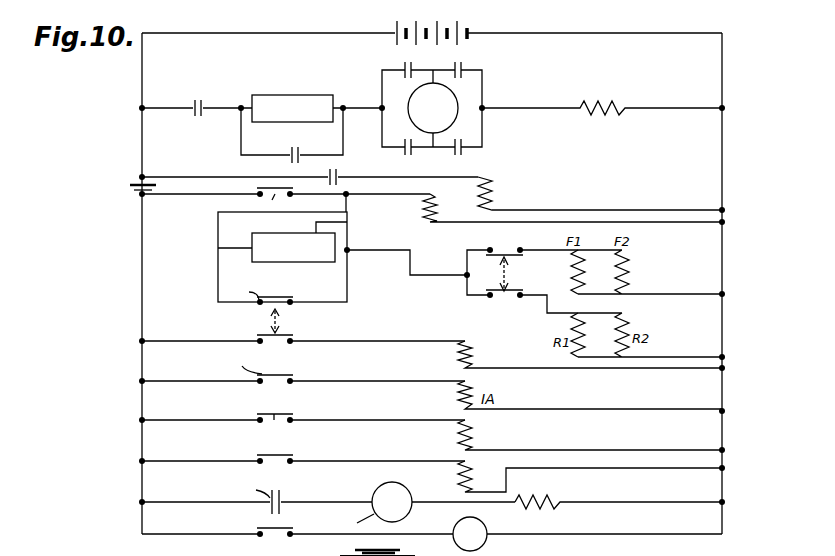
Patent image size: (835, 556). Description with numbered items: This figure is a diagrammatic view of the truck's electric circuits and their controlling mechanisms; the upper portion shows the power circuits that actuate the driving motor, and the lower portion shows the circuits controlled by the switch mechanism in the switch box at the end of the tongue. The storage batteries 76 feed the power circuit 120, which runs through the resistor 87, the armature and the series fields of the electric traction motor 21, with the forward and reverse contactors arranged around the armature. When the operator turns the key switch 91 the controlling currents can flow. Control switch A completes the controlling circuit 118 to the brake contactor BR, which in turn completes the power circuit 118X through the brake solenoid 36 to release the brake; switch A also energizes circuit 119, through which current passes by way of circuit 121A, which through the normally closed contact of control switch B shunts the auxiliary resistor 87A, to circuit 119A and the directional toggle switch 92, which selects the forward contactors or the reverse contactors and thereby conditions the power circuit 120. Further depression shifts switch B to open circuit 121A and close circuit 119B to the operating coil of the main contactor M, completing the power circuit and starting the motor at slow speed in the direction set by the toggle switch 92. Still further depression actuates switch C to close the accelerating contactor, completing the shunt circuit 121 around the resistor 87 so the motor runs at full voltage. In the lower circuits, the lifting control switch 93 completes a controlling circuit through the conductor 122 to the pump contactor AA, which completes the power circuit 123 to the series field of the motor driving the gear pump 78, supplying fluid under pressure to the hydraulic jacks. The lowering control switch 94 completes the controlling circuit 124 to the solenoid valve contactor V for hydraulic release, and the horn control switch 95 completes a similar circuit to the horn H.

The storage batteries 76 is at (457, 25).
The resistor 87 is at (297, 94).
The power circuit 120 is at (222, 104).
The shunt circuit 121 is at (344, 135).
The electric motor 21 is at (455, 101).
The key switch 91 is at (135, 183).
The power circuit 118X is at (213, 169).
The solenoid 36 is at (494, 183).
The controlling circuit 118 is at (214, 208).
The circuit 119 is at (247, 213).
The auxiliary resistor 87A is at (268, 267).
The circuit 119A is at (384, 246).
The circuit 121A is at (246, 304).
The directional toggle switch 92 is at (510, 259).
The circuit 119B is at (436, 334).
The conductor 122 is at (358, 421).
The lifting control switch 93 is at (287, 423).
The lowering control switch 94 is at (281, 465).
The controlling circuit 124 is at (374, 464).
The gear pump 78 is at (371, 486).
The power circuit 123 is at (618, 494).
The horn control switch 95 is at (274, 538).